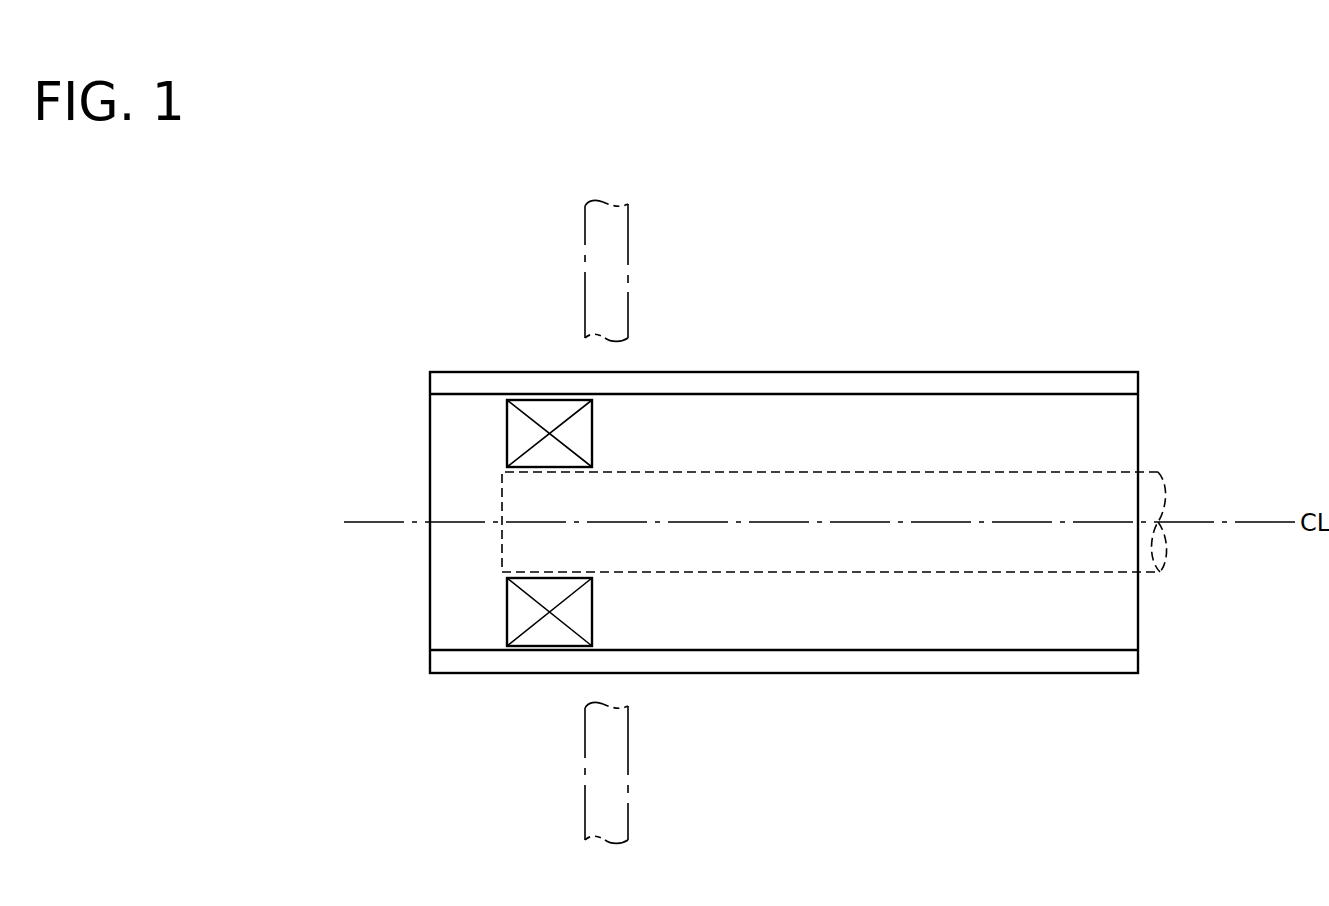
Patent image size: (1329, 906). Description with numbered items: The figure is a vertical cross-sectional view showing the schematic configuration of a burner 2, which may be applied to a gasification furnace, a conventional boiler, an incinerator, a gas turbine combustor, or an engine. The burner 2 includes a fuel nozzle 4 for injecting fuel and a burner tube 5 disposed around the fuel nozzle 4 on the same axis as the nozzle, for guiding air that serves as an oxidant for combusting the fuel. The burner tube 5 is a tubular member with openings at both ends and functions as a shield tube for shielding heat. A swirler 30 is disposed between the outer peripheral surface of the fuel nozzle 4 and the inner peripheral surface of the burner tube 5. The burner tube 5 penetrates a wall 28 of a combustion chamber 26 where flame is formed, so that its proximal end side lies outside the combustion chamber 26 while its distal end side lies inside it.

The burner 2 is at (930, 235).
The fuel nozzle 4 is at (845, 574).
The burner tube 5 is at (738, 372).
The combustion chamber 26 is at (512, 222).
The wall 28 is at (628, 233).
The swirler 30 is at (507, 609).